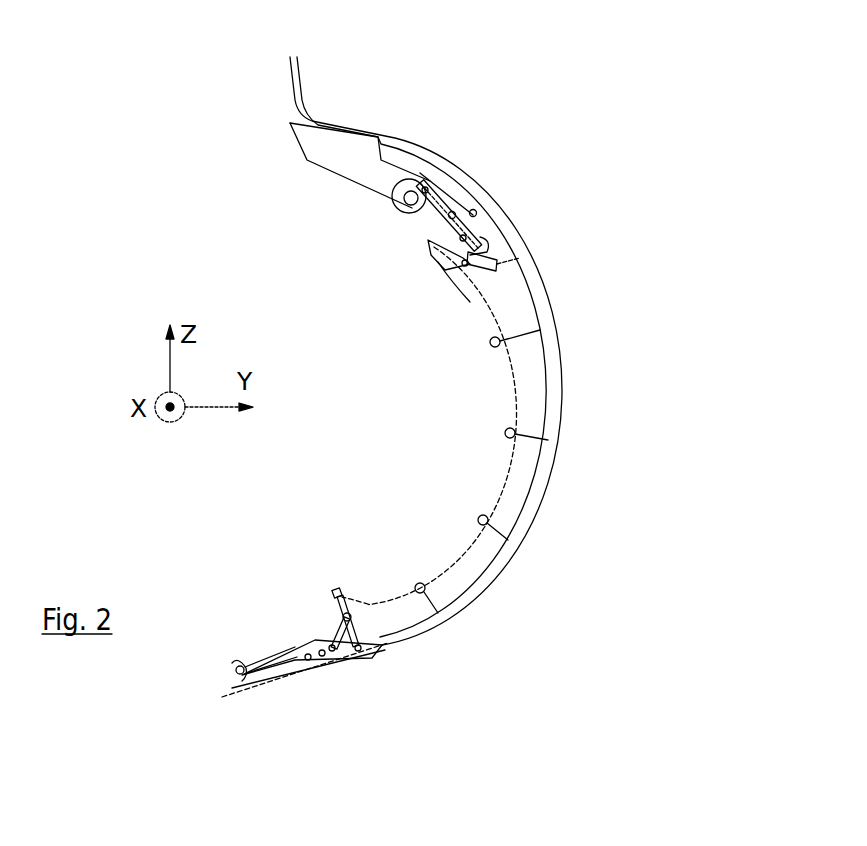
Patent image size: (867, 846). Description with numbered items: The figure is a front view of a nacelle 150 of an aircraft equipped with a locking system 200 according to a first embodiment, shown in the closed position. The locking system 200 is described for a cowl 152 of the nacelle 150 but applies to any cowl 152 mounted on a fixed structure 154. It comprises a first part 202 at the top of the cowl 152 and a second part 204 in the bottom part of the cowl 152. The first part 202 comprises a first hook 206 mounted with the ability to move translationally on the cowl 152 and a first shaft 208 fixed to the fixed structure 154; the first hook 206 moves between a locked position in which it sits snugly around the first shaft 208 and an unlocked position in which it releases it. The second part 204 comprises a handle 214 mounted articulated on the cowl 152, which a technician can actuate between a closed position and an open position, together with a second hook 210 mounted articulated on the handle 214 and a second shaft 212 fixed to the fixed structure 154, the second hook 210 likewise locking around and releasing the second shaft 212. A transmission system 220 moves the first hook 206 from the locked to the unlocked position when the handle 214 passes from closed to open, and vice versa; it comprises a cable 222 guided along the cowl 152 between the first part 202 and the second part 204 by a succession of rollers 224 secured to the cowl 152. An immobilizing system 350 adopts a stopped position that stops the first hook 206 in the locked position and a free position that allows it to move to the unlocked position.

The nacelle 150 is at (664, 56).
The cowl 152 is at (557, 380).
The fixed structure 154 is at (315, 153).
The locking system 200 is at (611, 196).
The first part 202 is at (271, 244).
The second part 204 is at (250, 565).
The first hook 206 is at (414, 195).
The first shaft 208 is at (413, 198).
The second hook 210 is at (236, 672).
The second shaft 212 is at (243, 673).
The handle 214 is at (278, 683).
The transmission system 220 is at (422, 434).
The cable 222 is at (509, 358).
The rollers 224 is at (482, 520).
The immobilizing system 350 is at (271, 203).